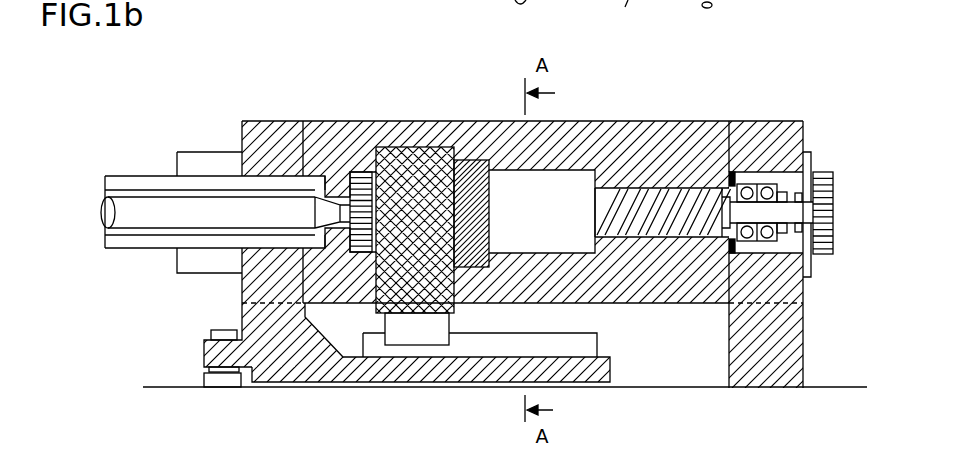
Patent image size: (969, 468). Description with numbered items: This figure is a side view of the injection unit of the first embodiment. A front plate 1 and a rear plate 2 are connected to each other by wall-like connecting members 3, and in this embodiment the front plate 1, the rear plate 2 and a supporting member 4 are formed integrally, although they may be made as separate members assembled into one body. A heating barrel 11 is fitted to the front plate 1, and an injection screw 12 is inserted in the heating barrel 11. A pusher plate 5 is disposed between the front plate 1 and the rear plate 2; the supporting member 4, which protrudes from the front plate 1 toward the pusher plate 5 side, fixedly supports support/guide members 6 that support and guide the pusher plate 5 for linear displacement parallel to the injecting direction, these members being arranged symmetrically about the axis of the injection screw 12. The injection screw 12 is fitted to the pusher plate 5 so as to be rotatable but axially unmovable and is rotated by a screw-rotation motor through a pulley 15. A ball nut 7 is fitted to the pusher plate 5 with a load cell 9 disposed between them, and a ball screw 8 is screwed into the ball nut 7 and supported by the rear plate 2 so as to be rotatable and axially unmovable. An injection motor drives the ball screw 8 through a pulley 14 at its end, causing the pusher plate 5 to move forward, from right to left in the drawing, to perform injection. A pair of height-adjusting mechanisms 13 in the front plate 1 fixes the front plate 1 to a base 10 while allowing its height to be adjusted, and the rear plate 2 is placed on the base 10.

The front plate 1 is at (265, 121).
The rear plate 2 is at (753, 145).
The connecting members 3 is at (672, 121).
The supporting member 4 is at (573, 382).
The pusher plate 5 is at (380, 147).
The support/guide members 6 is at (460, 348).
The ball nut 7 is at (578, 172).
The ball screw 8 is at (632, 190).
The load cell 9 is at (474, 160).
The base 10 is at (147, 388).
The heating barrel 11 is at (152, 176).
The injection screw 12 is at (140, 225).
The height-adjusting mechanisms 13 is at (215, 331).
The pulley 14 is at (823, 172).
The pulley 15 is at (352, 172).